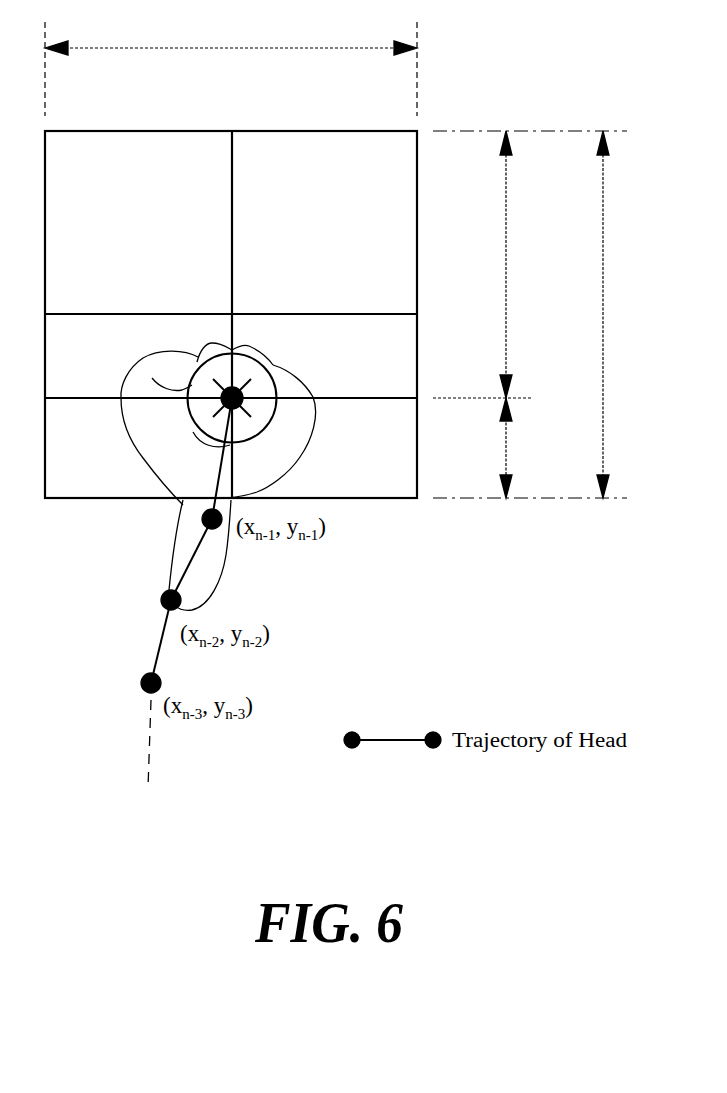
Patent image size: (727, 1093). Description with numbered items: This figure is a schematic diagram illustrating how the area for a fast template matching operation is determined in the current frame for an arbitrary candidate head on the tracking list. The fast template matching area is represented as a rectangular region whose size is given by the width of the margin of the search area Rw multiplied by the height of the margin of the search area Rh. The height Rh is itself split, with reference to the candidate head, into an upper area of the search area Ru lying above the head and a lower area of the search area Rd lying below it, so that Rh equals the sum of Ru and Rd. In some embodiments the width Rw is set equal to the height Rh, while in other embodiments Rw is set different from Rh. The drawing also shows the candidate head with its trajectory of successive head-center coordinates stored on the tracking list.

The width of the margin of the search area Rw is at (231, 66).
The upper area of the search area Ru is at (518, 264).
The lower area of the search area Rd is at (518, 448).
The height of the margin of the search area Rh is at (616, 314).